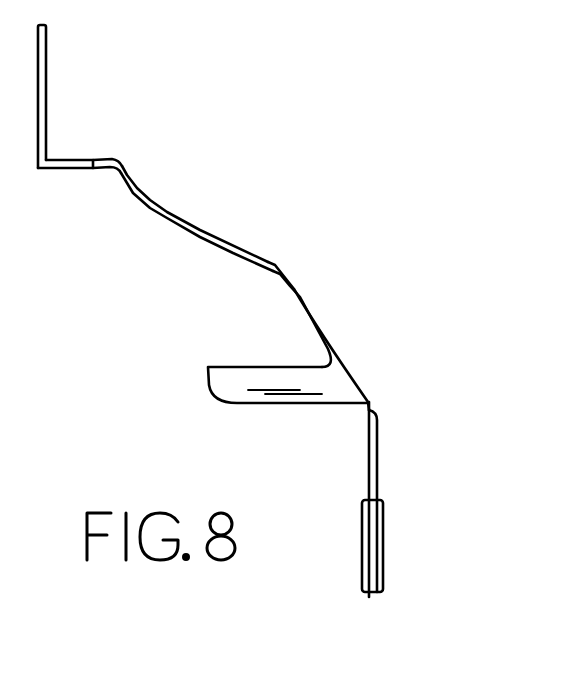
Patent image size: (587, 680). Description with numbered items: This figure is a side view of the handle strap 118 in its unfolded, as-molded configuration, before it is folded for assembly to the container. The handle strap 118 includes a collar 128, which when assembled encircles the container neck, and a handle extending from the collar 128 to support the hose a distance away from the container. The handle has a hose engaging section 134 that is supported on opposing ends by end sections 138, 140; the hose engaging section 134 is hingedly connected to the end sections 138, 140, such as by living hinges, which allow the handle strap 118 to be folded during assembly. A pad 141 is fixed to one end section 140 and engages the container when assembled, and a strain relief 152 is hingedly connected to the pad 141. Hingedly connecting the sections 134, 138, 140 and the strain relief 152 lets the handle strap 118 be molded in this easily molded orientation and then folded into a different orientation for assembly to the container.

The handle strap 118 is at (215, 158).
The collar 128 is at (48, 56).
The hose engaging section 134 is at (207, 230).
The end section 138 is at (72, 157).
The end section 140 is at (323, 321).
The pad 141 is at (232, 375).
The strain relief 152 is at (427, 622).